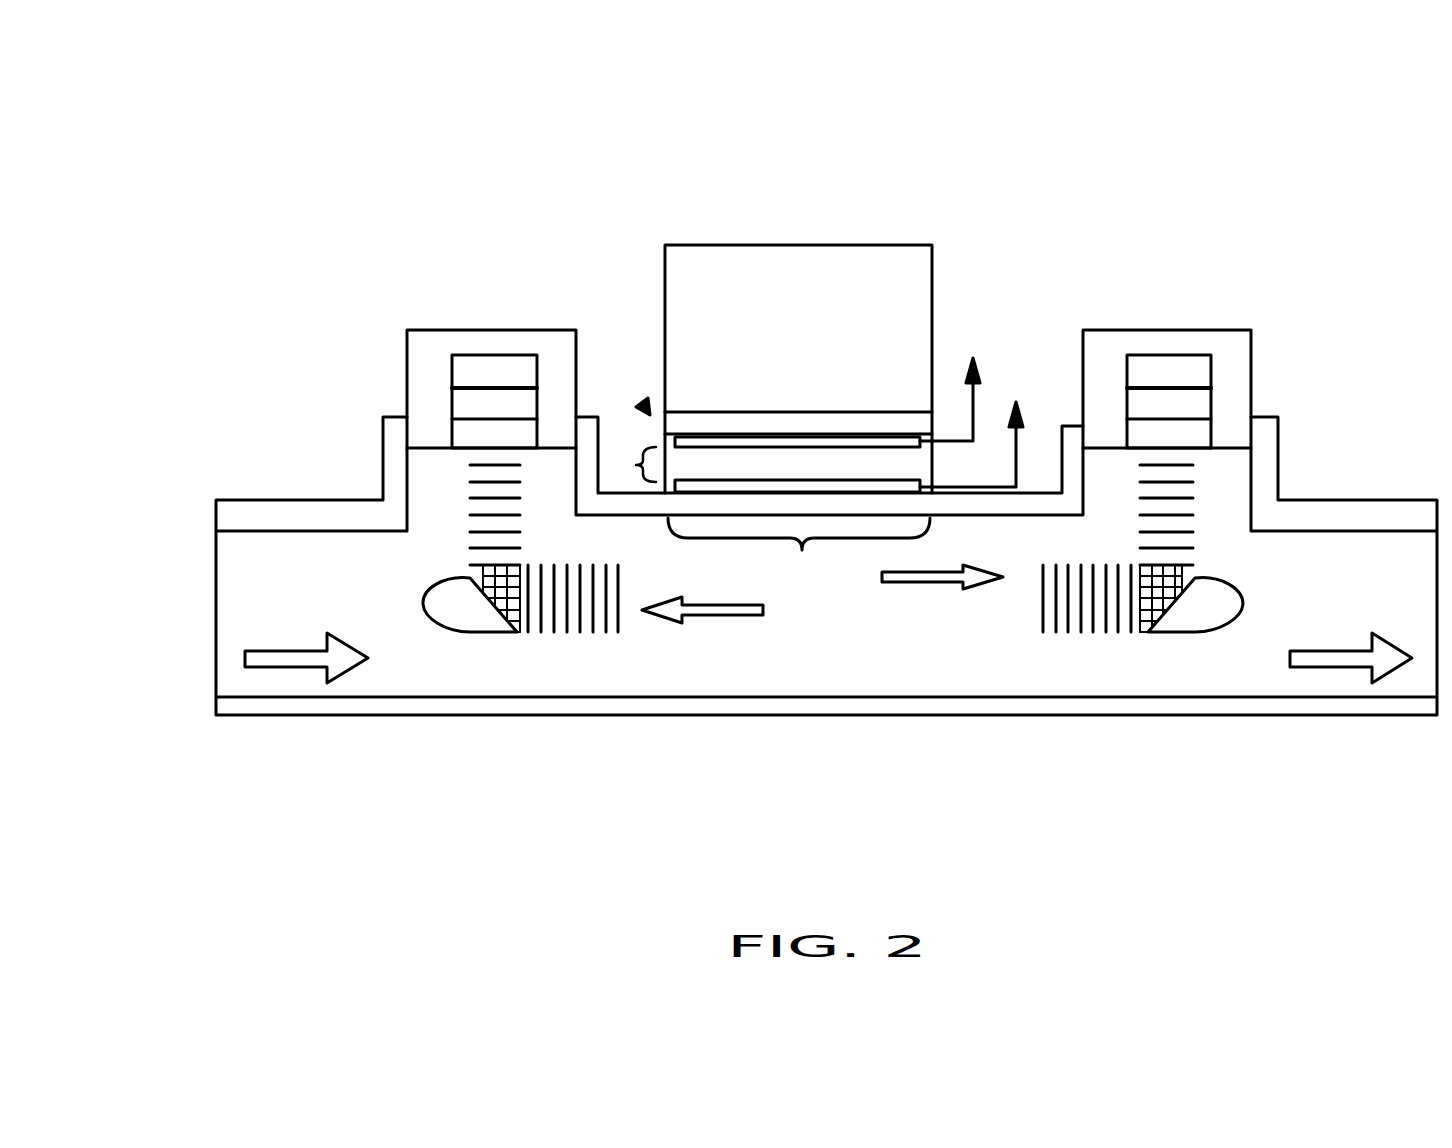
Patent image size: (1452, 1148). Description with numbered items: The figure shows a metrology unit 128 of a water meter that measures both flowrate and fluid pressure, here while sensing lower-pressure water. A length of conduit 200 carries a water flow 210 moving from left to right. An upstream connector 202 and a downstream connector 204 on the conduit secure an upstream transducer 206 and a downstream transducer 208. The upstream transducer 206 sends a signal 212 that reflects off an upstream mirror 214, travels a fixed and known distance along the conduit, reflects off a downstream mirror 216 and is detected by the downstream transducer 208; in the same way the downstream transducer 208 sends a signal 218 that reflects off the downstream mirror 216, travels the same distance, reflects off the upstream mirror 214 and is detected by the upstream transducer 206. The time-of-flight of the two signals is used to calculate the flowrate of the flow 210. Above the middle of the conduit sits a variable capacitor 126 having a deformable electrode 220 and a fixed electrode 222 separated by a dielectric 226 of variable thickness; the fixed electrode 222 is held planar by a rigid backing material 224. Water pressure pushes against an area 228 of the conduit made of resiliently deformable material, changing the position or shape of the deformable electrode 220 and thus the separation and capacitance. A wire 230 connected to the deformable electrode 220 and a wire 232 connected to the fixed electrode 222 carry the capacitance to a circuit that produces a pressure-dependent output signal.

The variable capacitor 126 is at (645, 405).
The metrology unit 128 is at (1303, 86).
The conduit 200 is at (1340, 498).
The upstream connector 202 is at (440, 330).
The downstream connector 204 is at (1180, 330).
The upstream transducer 206 is at (495, 418).
The downstream transducer 208 is at (1178, 420).
The water flow 210 is at (300, 650).
The signal 212 is at (922, 587).
The upstream mirror 214 is at (465, 628).
The downstream mirror 216 is at (1193, 636).
The signal 218 is at (723, 617).
The deformable electrode 220 is at (878, 480).
The fixed electrode 222 is at (735, 433).
The rigid backing material 224 is at (818, 407).
The dielectric 226 is at (636, 462).
The area 228 is at (802, 545).
The wire 230 is at (1014, 465).
The wire 232 is at (975, 400).